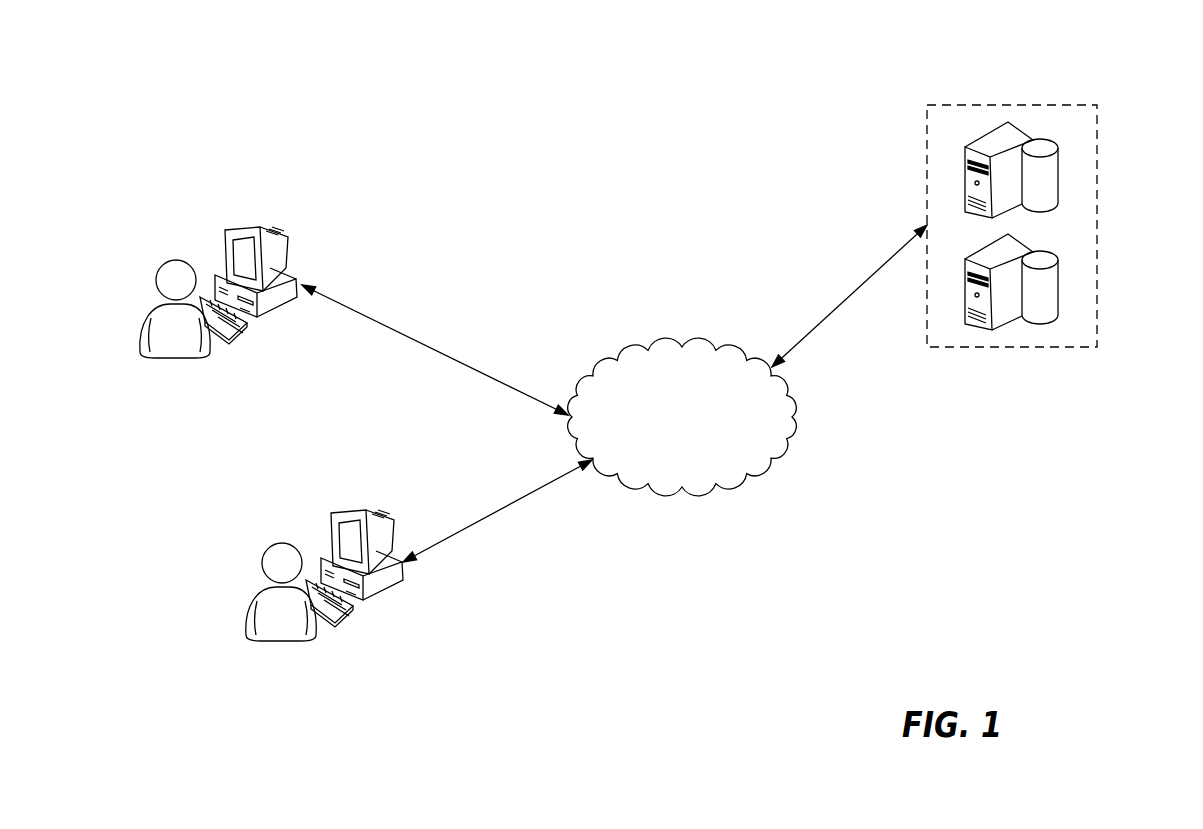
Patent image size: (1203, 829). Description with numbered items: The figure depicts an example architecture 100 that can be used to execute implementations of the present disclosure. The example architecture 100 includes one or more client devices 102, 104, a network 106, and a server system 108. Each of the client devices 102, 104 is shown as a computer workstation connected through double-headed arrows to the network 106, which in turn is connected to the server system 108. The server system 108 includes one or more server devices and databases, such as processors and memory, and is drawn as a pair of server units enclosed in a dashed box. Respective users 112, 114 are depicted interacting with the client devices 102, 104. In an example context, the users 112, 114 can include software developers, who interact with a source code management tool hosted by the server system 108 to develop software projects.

The example architecture 100 is at (527, 94).
The client device 102 is at (222, 238).
The client device 104 is at (329, 550).
The network 106 is at (685, 346).
The server system 108 is at (1097, 230).
The user 112 is at (175, 358).
The user 114 is at (297, 624).